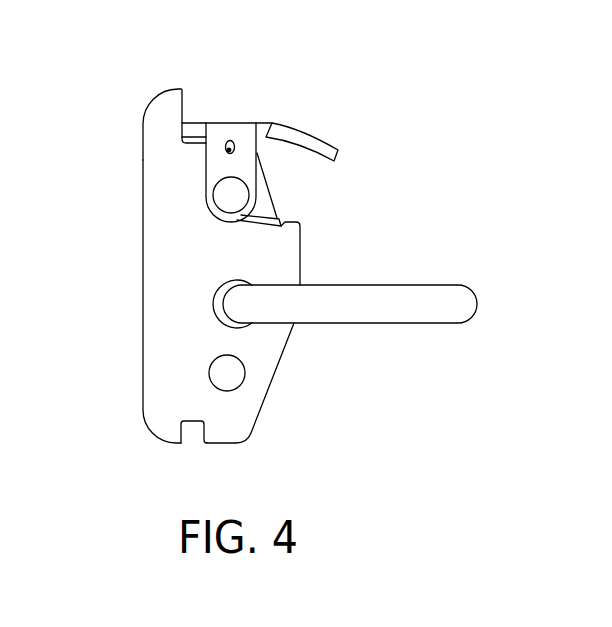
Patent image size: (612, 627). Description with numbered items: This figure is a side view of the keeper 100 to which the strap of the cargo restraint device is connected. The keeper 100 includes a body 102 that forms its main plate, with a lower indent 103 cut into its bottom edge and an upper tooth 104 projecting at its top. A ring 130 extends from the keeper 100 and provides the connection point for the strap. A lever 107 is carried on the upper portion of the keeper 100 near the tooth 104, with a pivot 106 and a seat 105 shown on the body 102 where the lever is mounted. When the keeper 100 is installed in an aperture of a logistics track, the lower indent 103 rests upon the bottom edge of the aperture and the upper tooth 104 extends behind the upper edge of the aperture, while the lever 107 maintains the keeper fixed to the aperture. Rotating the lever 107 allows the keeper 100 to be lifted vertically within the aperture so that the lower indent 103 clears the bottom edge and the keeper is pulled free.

The keeper 100 is at (153, 275).
The body 102 is at (160, 370).
The lower indent 103 is at (183, 437).
The upper tooth 104 is at (158, 103).
The top notch / flange seat 105 is at (193, 128).
The pivot bracket with bore 106 is at (233, 193).
The lever 107 is at (313, 148).
The ring 130 is at (388, 312).